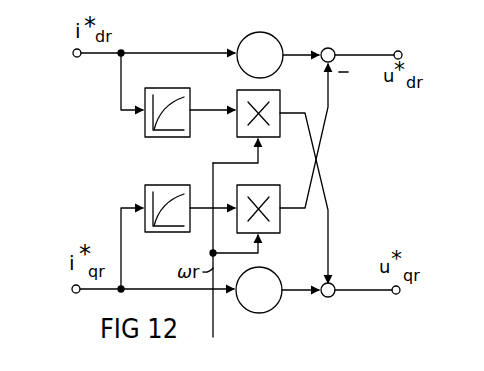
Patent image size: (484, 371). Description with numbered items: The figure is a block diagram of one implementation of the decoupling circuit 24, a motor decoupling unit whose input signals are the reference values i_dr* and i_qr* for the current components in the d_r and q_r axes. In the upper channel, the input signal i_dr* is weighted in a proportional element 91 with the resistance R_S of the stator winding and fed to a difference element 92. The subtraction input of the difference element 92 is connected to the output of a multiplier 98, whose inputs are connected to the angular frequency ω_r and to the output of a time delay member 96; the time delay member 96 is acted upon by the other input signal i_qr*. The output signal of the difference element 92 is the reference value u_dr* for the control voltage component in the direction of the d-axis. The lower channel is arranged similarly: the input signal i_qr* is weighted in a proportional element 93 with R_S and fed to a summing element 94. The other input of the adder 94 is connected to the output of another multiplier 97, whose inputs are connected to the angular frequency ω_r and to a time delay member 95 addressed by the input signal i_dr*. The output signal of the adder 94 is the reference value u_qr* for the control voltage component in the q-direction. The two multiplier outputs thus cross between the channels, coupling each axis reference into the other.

The proportional element 91 is at (276, 39).
The difference element 92 is at (333, 50).
The proportional element 93 is at (275, 306).
The summing element 94 is at (328, 297).
The time delay member 95 is at (148, 130).
The time delay member 96 is at (148, 190).
The multiplier 97 is at (280, 91).
The multiplier 98 is at (280, 234).
The decoupling circuit 24 is at (336, 188).